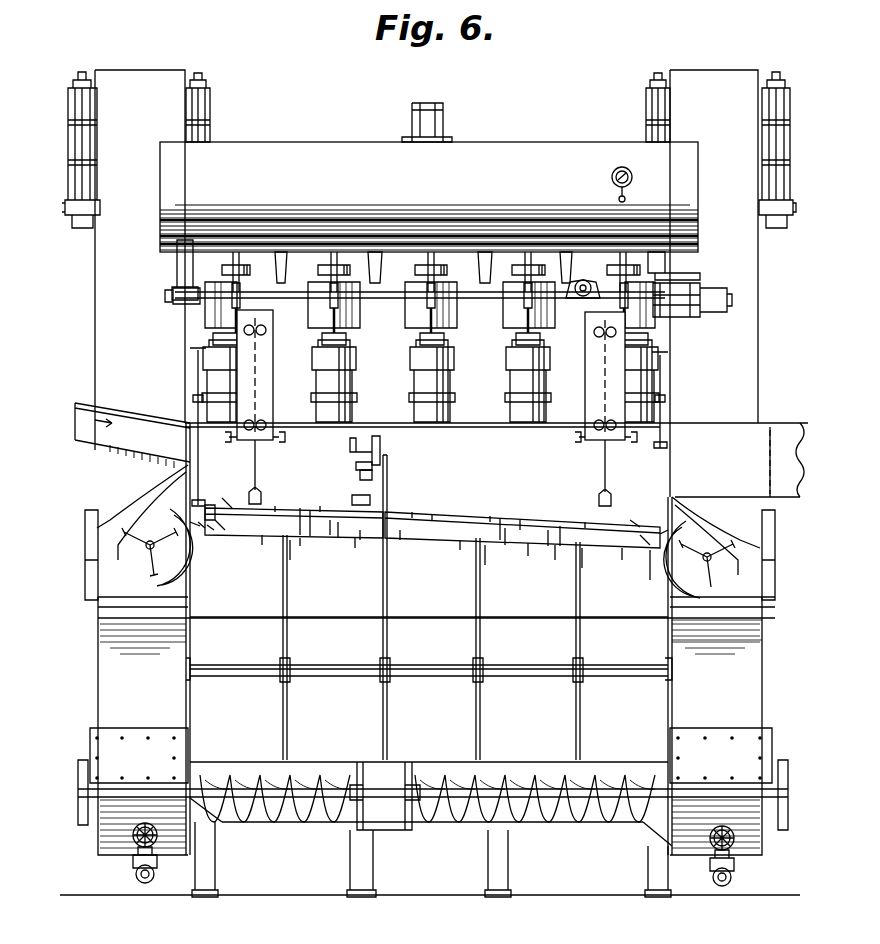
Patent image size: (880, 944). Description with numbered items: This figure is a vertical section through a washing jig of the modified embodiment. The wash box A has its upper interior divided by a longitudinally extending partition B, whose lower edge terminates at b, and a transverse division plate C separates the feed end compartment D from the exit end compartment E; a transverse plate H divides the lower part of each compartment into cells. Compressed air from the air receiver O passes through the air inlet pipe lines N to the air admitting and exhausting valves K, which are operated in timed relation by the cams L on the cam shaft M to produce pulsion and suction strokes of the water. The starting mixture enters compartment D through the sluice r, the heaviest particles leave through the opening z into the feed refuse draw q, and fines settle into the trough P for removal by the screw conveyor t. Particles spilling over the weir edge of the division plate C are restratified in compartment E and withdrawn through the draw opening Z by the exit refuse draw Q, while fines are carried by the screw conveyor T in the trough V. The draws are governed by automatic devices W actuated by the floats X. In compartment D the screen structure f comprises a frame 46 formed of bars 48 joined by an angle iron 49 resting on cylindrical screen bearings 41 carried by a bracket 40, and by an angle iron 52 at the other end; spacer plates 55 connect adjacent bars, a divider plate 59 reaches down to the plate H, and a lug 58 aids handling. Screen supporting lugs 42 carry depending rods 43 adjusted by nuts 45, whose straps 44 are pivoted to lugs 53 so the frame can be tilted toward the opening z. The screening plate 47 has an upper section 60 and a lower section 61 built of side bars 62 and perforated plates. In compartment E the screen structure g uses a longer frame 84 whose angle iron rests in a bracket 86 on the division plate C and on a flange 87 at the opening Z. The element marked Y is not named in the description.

The air receiver O is at (490, 160).
The bucket elevator S is at (98, 324).
The air inlet pipe lines N is at (318, 262).
The cams L is at (328, 290).
The cam shaft M is at (393, 303).
The air admitting and exhausting valves K is at (214, 382).
The automatic control devices W is at (275, 366).
The floats X is at (254, 492).
The wash box A is at (468, 424).
The trough P is at (708, 494).
The sluice r is at (120, 410).
The feed refuse draw q is at (148, 565).
The exit refuse draw Q is at (716, 575).
The opening z is at (186, 522).
The draw opening Z is at (672, 530).
The feed end compartment D is at (294, 491).
The exit end compartment E is at (522, 501).
The longitudinally extending partition B is at (458, 448).
The division plate C is at (388, 462).
The transverse plate H is at (290, 641).
The lower longitudinal edge of partition b is at (426, 616).
The wall Y is at (666, 703).
The screw conveyor T is at (586, 826).
The screw conveyor t is at (294, 825).
The trough V is at (534, 826).
The lug 58 is at (215, 505).
The lower section 61 is at (435, 502).
The side bars 62 is at (276, 506).
The screening surface or plate 47 is at (425, 516).
The screen structure f is at (310, 508).
The upper section 60 is at (320, 506).
The nuts 45 is at (350, 448).
The screen supporting lugs 42 is at (381, 446).
The depending rod 43 is at (356, 466).
The strap 44 is at (360, 476).
The lugs 53 is at (350, 495).
The frame 84 is at (502, 516).
The screen structure g is at (520, 518).
The angle iron 49 is at (220, 530).
The cylindrical screen bearings 41 is at (210, 530).
The bracket 40 is at (203, 530).
The spacer plates 55 is at (439, 557).
The frame 46 is at (417, 541).
The bars 48 is at (441, 541).
The angle iron 52 is at (350, 547).
The divider plate 59 is at (448, 562).
The bracket 86 is at (398, 547).
The flange 87 is at (655, 573).